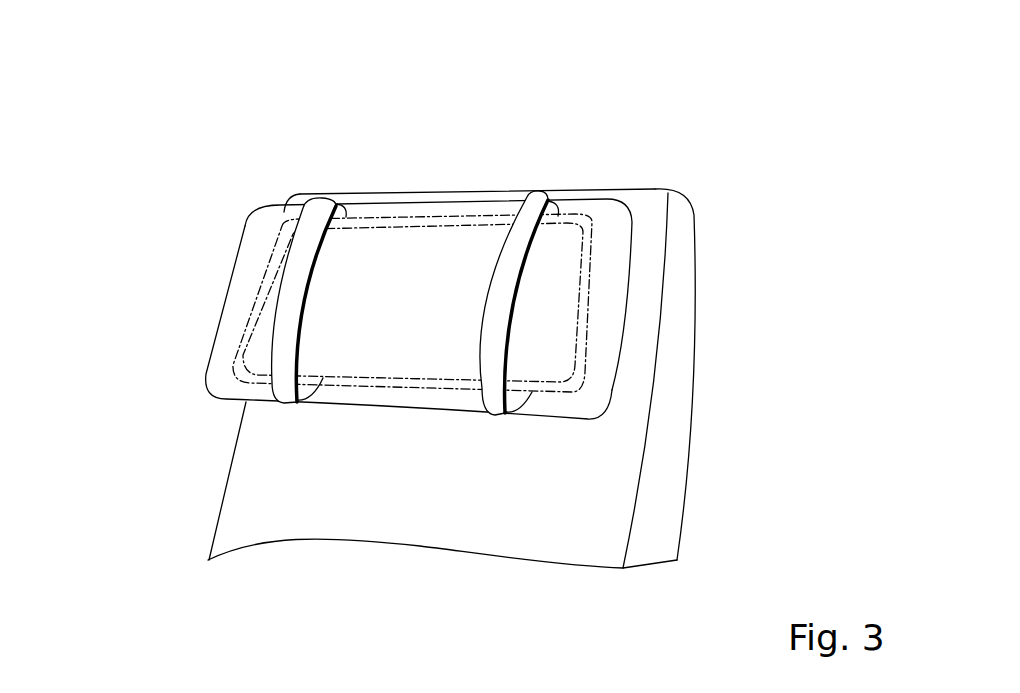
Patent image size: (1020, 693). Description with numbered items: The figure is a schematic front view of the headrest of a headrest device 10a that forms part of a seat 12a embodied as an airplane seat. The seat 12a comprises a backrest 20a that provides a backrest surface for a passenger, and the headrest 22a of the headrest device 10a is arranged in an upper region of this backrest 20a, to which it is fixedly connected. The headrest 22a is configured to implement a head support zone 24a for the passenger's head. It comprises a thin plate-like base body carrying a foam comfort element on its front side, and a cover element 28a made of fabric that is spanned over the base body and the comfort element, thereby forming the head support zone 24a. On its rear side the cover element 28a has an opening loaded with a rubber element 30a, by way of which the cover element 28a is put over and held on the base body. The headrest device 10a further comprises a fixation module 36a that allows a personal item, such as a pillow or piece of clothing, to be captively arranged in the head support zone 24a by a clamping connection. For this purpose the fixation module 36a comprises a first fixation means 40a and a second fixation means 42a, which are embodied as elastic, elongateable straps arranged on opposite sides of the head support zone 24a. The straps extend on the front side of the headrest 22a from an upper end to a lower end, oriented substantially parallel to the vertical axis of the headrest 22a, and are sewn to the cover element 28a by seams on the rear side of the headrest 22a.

The headrest device 10a is at (152, 251).
The seat 12a is at (422, 180).
The backrest 20a is at (533, 478).
The headrest 22a is at (608, 317).
The head support zone 24a is at (406, 320).
The cover element 28a is at (608, 227).
The rubber element 30a is at (250, 311).
The fixation module 36a is at (566, 179).
The first fixation means 40a is at (525, 192).
The second fixation means 42a is at (315, 235).